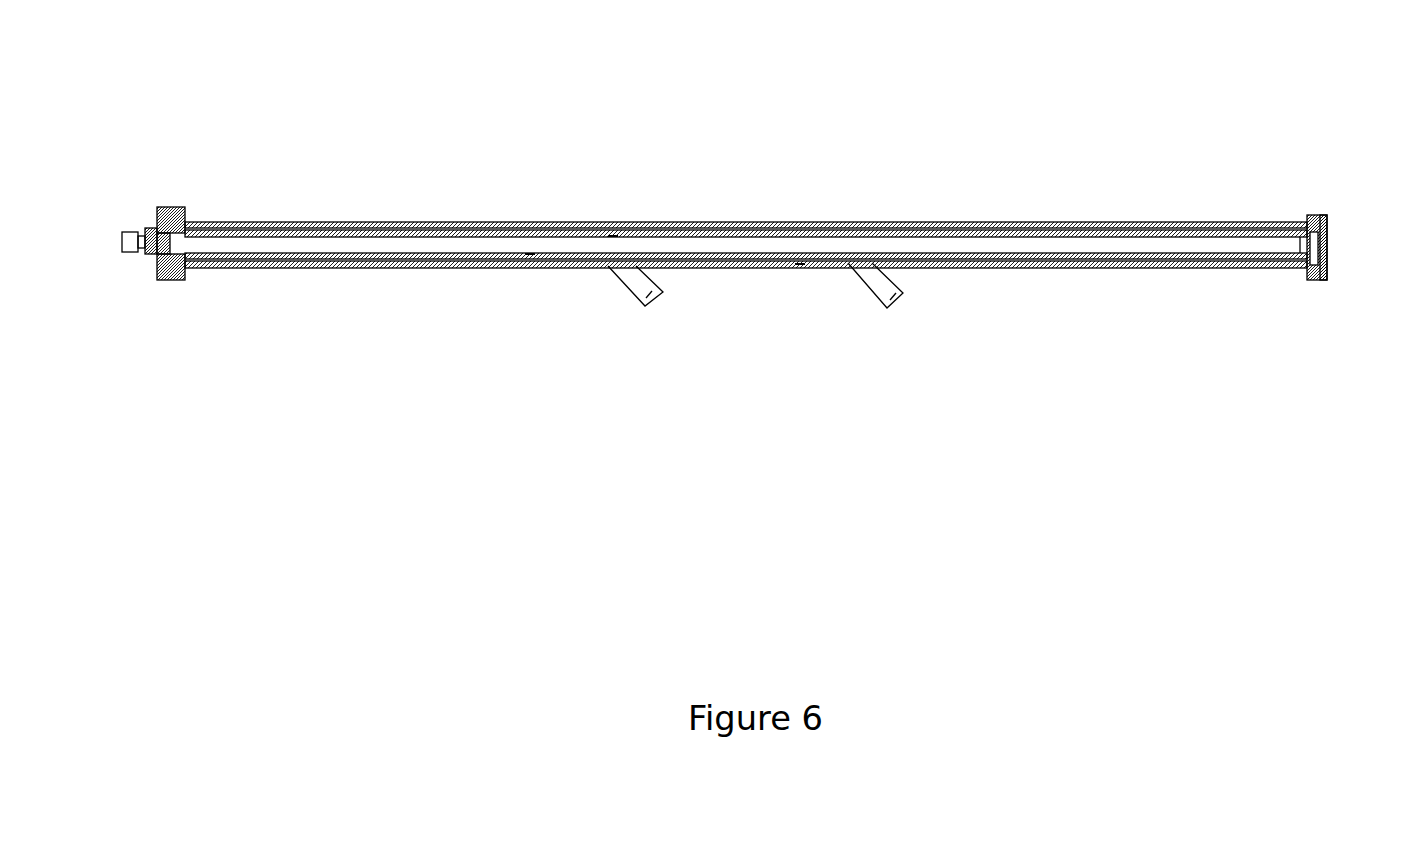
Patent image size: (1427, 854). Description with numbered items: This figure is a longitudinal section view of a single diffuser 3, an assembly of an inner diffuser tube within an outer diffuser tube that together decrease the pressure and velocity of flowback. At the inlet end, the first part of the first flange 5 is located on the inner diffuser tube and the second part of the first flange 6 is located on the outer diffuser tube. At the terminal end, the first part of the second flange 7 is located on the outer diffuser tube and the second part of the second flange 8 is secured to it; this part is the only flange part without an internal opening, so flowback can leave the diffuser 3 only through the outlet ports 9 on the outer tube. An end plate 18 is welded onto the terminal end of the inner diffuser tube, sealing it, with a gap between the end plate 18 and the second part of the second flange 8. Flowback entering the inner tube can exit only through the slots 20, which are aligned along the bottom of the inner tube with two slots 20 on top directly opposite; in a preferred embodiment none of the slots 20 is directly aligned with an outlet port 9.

The diffuser 3 is at (425, 198).
The first part of first flange 5 is at (160, 205).
The second part of first flange 6 is at (176, 203).
The first part of second flange 7 is at (1313, 218).
The second part of second flange 8 is at (1324, 216).
The outlet port 9 is at (653, 292).
The end plate (cap) 18 is at (1300, 243).
The slot 20 is at (848, 290).